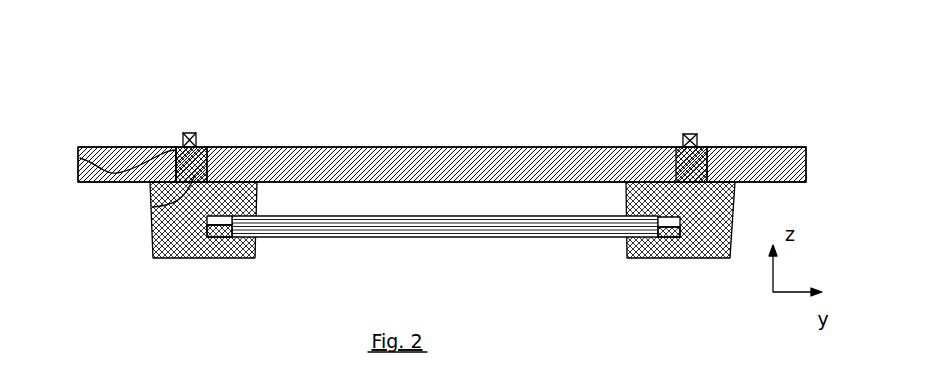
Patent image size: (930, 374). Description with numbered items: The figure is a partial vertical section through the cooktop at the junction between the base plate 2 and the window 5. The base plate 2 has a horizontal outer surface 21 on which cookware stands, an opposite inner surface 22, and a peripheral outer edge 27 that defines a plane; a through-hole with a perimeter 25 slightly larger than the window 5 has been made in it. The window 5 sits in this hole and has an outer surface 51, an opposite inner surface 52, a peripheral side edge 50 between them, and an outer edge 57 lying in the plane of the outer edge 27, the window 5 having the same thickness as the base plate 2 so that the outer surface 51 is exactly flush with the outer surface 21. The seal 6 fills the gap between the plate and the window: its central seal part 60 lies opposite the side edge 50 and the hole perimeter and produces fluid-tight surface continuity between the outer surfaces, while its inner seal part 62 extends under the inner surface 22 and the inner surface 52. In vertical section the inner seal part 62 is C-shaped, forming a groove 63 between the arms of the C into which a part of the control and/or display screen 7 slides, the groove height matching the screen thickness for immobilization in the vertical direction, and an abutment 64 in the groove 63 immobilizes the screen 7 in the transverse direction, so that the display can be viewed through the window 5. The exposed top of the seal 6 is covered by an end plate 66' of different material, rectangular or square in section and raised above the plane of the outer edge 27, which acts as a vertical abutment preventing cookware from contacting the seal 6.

The base plate 2 is at (147, 147).
The window 5 is at (556, 152).
The seal 6 is at (193, 112).
The control and/or display screen 7 is at (412, 229).
The outer surface 21 is at (89, 147).
The inner surface 22 is at (137, 147).
The perimeter 25 is at (80, 158).
The peripheral outer edge 27 is at (707, 147).
The peripheral side edge 50 is at (213, 147).
The outer surface 51 is at (323, 147).
The inner surface 52 is at (368, 148).
The peripheral outer edge 57 is at (675, 147).
The central seal part 60 is at (153, 207).
The inner seal part 62 is at (102, 182).
The groove 63 is at (207, 232).
The abutment 64 is at (212, 230).
The end plate 66' is at (704, 84).